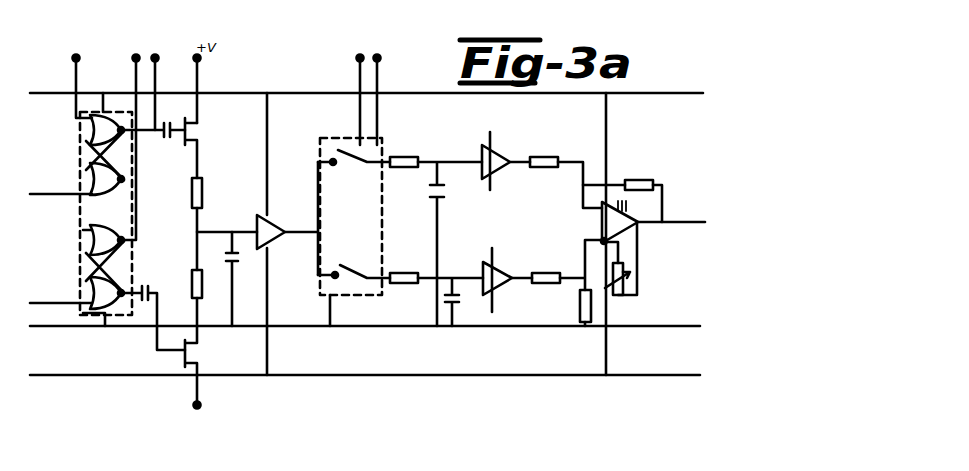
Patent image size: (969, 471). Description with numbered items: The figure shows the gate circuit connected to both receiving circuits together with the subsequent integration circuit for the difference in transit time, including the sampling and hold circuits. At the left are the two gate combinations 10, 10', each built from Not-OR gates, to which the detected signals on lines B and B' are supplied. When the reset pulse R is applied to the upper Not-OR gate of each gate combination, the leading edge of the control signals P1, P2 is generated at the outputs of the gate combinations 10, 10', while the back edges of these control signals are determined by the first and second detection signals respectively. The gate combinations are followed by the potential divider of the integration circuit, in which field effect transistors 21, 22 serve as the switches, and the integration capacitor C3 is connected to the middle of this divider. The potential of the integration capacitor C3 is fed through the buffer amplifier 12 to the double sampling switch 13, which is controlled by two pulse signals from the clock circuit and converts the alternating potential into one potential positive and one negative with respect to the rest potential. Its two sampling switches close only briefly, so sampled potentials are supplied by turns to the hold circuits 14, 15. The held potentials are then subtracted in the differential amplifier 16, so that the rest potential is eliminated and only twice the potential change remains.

The gate combination 10 is at (107, 204).
The gate combination 10' is at (106, 287).
The buffer amplifier 12 is at (287, 234).
The double sampling switch 13 is at (354, 180).
The hold circuit 14 is at (542, 170).
The hold circuit 15 is at (543, 283).
The differential amplifier 16 is at (637, 234).
The field effect transistor 21 is at (206, 175).
The field effect transistor 22 is at (199, 371).
The integration capacitor C3 is at (240, 279).
The reset pulse R is at (81, 76).
The control signal P1 is at (157, 82).
The control signal P2 is at (132, 137).